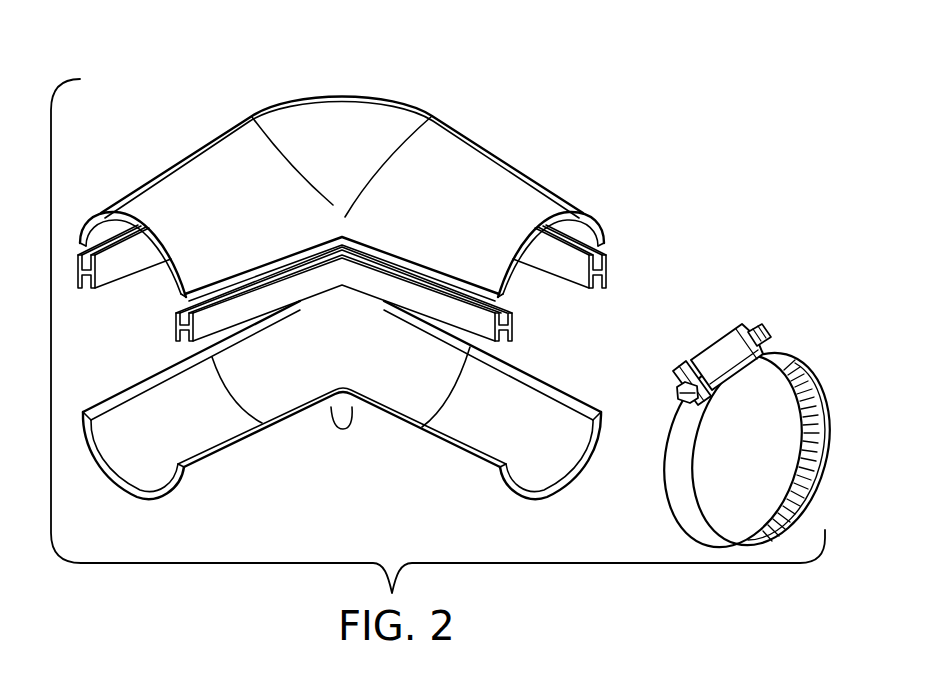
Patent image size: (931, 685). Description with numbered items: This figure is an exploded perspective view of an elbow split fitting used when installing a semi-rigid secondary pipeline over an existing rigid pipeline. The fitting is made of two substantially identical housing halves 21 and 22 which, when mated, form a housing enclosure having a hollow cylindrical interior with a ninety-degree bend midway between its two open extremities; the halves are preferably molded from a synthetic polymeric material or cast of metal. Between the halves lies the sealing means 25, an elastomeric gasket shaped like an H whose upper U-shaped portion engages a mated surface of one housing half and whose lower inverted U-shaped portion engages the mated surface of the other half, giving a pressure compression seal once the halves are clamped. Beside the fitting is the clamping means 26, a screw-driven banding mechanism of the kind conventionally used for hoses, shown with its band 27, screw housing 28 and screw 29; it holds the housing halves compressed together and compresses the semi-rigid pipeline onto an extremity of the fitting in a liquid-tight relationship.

The housing half 21 is at (378, 423).
The housing half 22 is at (387, 110).
The sealing means 25 is at (110, 268).
The clamping means 26 is at (724, 430).
The clamp band 27 is at (785, 481).
The worm-gear housing 28 is at (737, 342).
The adjusting screw 29 is at (700, 397).